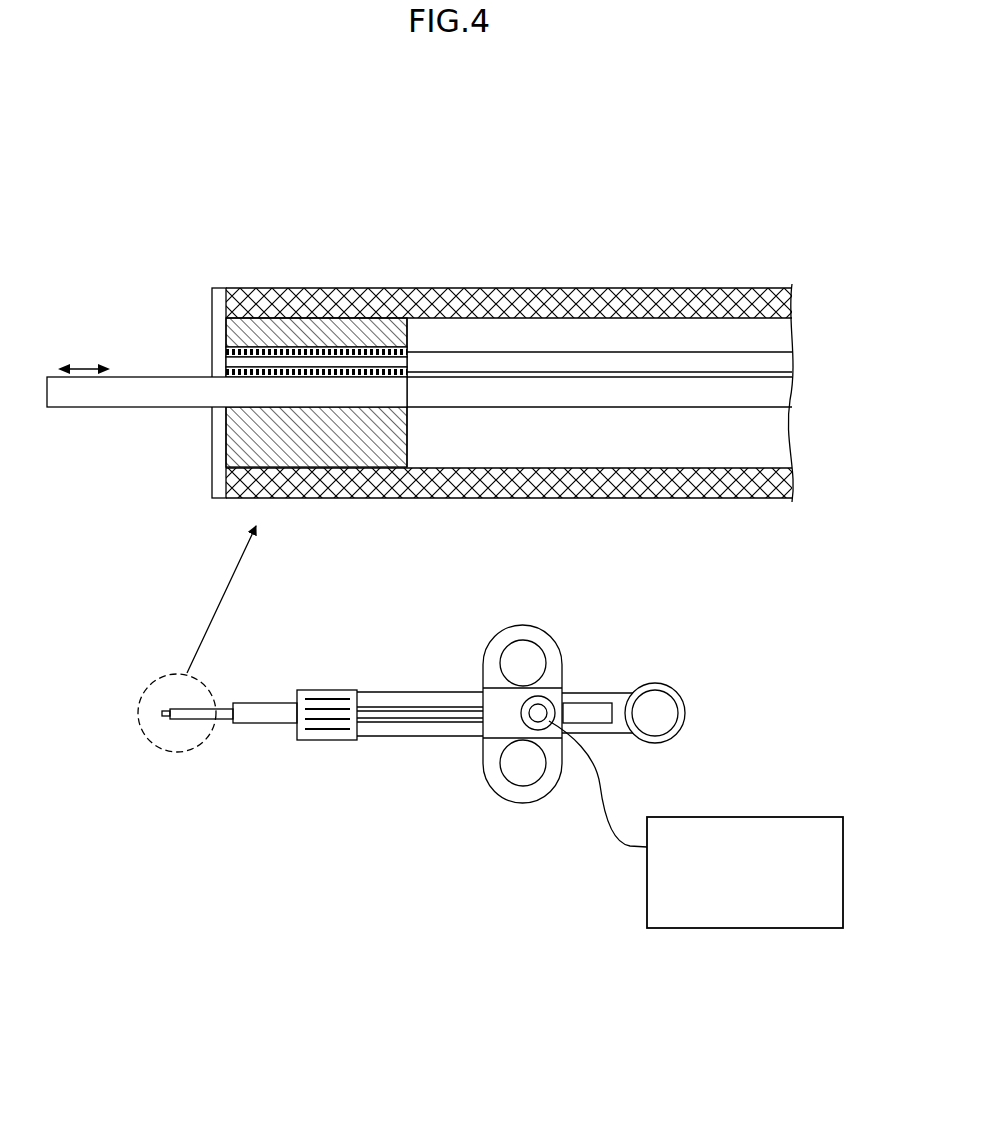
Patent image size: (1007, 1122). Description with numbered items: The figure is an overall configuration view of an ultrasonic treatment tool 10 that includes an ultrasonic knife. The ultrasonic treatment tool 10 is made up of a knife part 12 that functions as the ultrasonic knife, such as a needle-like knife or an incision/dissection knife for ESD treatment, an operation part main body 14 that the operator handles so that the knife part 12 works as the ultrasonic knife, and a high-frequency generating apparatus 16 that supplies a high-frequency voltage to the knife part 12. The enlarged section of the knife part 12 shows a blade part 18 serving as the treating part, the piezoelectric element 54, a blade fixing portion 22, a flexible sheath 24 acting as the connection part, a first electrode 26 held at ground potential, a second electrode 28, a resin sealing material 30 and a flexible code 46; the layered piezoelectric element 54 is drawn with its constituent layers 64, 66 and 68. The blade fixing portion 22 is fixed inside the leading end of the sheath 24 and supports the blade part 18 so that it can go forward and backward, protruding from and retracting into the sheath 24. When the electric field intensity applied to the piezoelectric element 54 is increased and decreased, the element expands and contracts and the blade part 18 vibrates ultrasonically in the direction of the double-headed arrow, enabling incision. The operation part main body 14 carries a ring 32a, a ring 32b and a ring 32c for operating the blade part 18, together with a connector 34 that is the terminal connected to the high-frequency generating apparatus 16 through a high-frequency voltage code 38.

The ultrasonic treatment tool 10 is at (650, 134).
The knife part 12 is at (503, 222).
The operation part main body 14 is at (388, 792).
The high-frequency generating apparatus 16 is at (708, 817).
The blade part 18 is at (104, 408).
The blade fixing portion 22 is at (313, 325).
The flexible sheath 24 is at (610, 289).
The first electrode 26 is at (773, 374).
The second electrode 28 is at (773, 352).
The resin sealing material 30 is at (219, 290).
The ring 32a is at (651, 683).
The ring 32b is at (523, 626).
The ring 32c is at (523, 803).
The connector 34 is at (551, 699).
The high-frequency voltage code 38 is at (606, 794).
The flexible code 46 is at (790, 391).
The piezoelectric element 54 is at (252, 331).
The electrode layer 64 is at (279, 361).
The insulating layer 66 is at (226, 362).
The electrode layer 68 is at (226, 346).